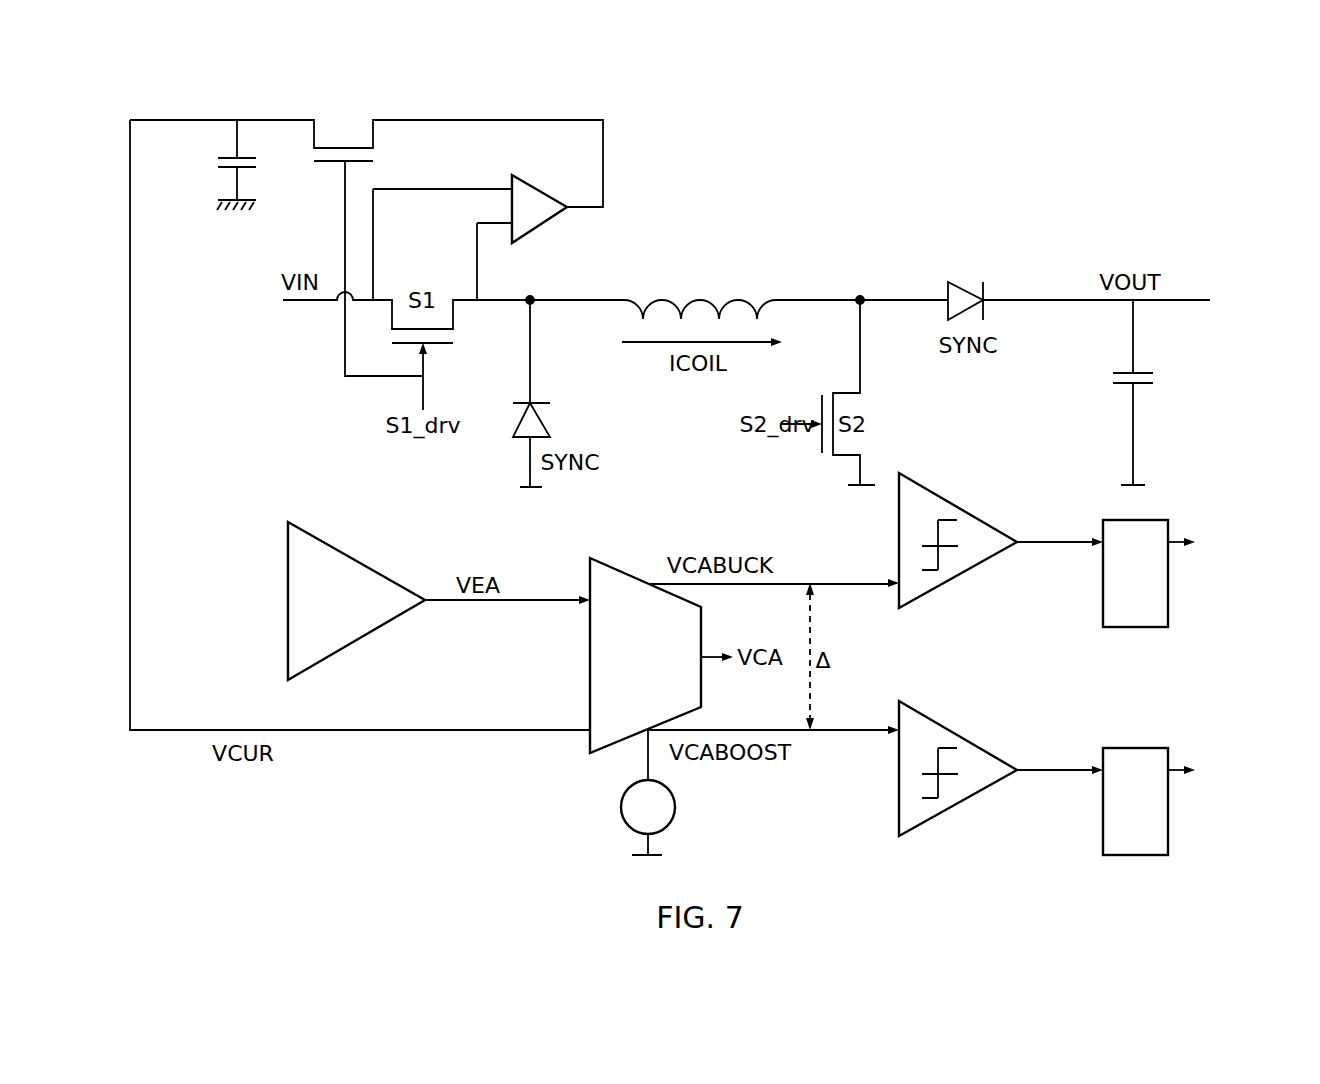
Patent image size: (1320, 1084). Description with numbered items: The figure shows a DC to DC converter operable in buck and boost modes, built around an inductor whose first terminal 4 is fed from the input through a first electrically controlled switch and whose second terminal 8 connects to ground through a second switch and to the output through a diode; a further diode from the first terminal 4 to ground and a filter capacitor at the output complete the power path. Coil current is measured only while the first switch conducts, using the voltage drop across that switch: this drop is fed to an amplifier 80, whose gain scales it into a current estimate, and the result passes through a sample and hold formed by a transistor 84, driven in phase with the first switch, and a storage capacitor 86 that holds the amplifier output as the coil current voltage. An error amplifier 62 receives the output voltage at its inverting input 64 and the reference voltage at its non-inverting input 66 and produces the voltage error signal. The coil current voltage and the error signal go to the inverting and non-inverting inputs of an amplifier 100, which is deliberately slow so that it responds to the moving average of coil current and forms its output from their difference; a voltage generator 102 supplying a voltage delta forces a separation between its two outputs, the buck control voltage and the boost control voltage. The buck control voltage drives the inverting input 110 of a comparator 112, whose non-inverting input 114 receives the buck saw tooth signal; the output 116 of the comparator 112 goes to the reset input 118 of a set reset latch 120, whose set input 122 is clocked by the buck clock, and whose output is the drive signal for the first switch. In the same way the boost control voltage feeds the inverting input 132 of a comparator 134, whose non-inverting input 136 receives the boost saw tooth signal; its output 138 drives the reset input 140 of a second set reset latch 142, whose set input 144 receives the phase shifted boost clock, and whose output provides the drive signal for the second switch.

The first terminal 4 is at (528, 297).
The second terminal 8 is at (858, 297).
The error amplifier 62 is at (355, 643).
The inverting input 64 is at (283, 537).
The non-inverting input 66 is at (281, 665).
The amplifier 80 is at (538, 188).
The transistor 84 is at (335, 163).
The storage capacitor 86 is at (218, 160).
The amplifier 100 is at (589, 661).
The voltage generator 102 is at (621, 805).
The inverting input 110 is at (897, 597).
The comparator 112 is at (958, 500).
The non-inverting input 114 is at (895, 520).
The output 116 is at (1017, 535).
The reset input 118 is at (1100, 530).
The set reset latch 120 is at (1170, 605).
The set input 122 is at (1100, 625).
The inverting input 132 is at (893, 740).
The comparator 134 is at (958, 728).
The non-inverting input 136 is at (893, 825).
The output 138 is at (1017, 763).
The reset input 140 is at (1100, 758).
The set reset latch 142 is at (1170, 835).
The set input 144 is at (1100, 853).